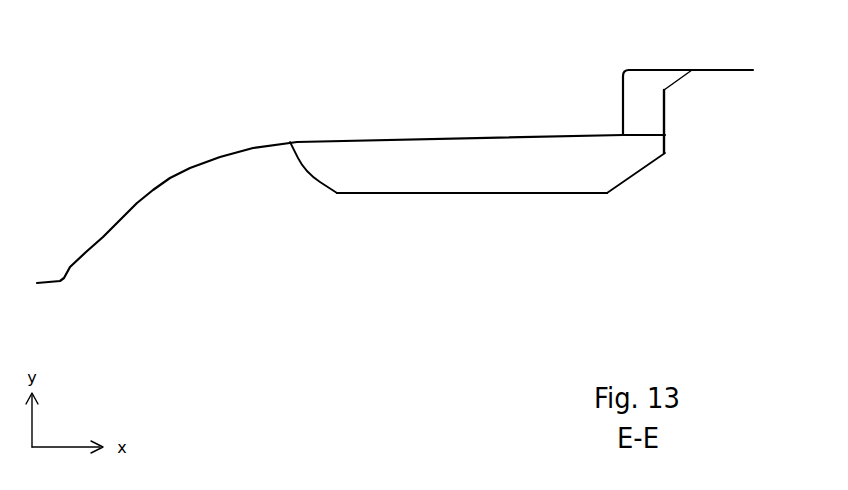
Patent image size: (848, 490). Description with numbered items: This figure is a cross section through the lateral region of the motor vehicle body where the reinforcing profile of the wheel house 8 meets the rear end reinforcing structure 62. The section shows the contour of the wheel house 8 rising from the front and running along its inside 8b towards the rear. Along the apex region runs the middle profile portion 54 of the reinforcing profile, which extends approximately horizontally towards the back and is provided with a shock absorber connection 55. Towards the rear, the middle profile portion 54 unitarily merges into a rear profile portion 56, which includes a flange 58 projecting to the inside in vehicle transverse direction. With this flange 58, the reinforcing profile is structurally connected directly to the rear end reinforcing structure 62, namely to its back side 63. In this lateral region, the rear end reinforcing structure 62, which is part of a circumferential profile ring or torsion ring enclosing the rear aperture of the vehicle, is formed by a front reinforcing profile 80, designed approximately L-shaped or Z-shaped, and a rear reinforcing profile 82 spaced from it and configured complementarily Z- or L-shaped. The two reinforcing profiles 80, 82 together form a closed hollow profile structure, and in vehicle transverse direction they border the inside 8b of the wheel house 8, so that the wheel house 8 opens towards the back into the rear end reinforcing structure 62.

The wheel house 8 is at (190, 168).
The inside of the wheel house 8b is at (354, 138).
The middle profile portion 54 is at (498, 195).
The shock absorber connection 55 is at (418, 195).
The rear profile portion 56 is at (637, 172).
The flange 58 is at (665, 137).
The rear end reinforcing structure 62 is at (647, 90).
The back side of the rear end reinforcing structure 63 is at (711, 120).
The front reinforcing profile 80 is at (623, 98).
The rear reinforcing profile 82 is at (665, 97).